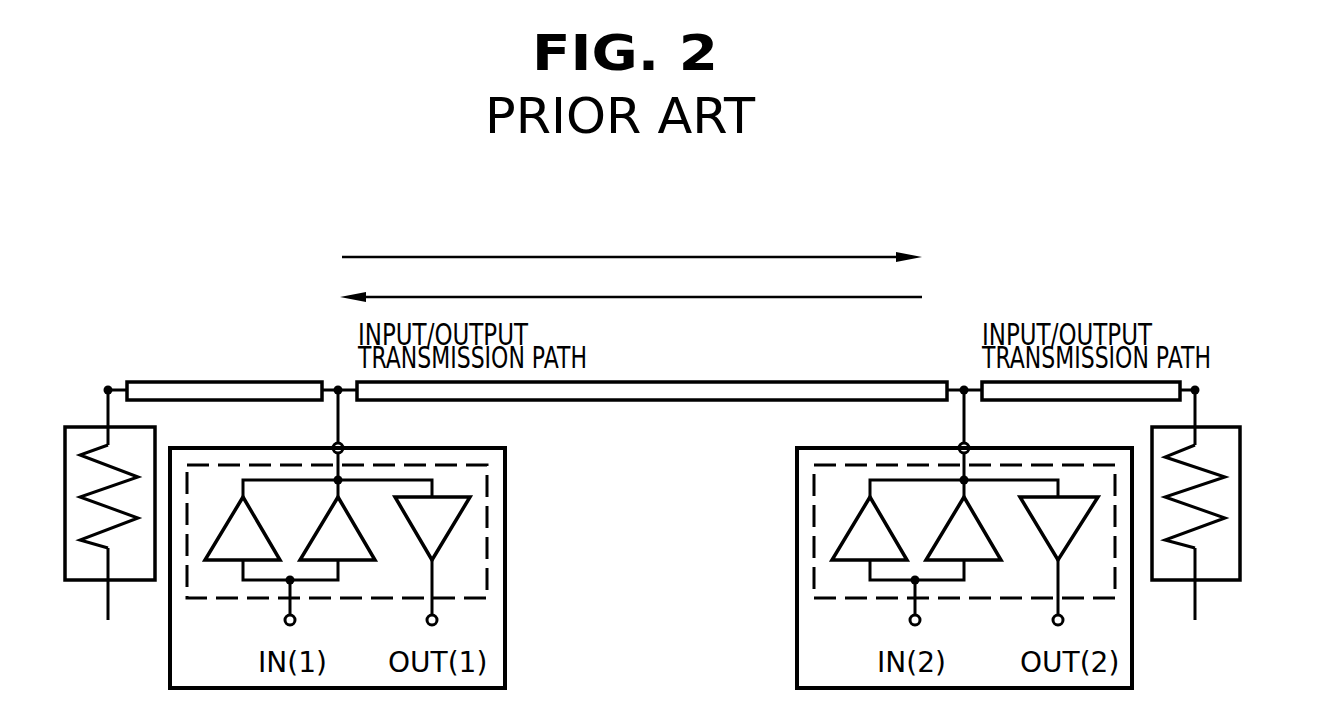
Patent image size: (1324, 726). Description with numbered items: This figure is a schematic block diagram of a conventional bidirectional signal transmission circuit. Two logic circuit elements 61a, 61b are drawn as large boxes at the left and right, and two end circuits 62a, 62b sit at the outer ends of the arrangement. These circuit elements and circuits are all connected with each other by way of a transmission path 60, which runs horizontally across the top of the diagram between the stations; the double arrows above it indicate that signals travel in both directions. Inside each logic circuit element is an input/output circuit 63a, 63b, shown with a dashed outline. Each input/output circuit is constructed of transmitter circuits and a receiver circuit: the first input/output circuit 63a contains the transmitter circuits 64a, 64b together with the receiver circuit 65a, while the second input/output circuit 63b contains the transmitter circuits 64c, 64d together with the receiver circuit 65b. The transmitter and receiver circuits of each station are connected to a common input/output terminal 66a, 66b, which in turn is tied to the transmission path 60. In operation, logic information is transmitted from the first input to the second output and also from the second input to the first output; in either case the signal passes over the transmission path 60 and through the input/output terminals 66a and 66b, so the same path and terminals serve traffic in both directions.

The transmission path 60 is at (624, 382).
The logic circuit element 61a is at (505, 610).
The logic circuit element 61b is at (797, 600).
The end circuit 62a is at (80, 427).
The end circuit 62b is at (1225, 427).
The input/output circuit 63a is at (487, 503).
The input/output circuit 63b is at (814, 497).
The transmitter circuit 64a is at (222, 556).
The transmitter circuit 64b is at (352, 556).
The transmitter circuit 64c is at (850, 556).
The transmitter circuit 64d is at (980, 556).
The receiver circuit 65a is at (434, 530).
The receiver circuit 65b is at (1060, 538).
The common input/output terminal 66a is at (334, 444).
The common input/output terminal 66b is at (960, 444).